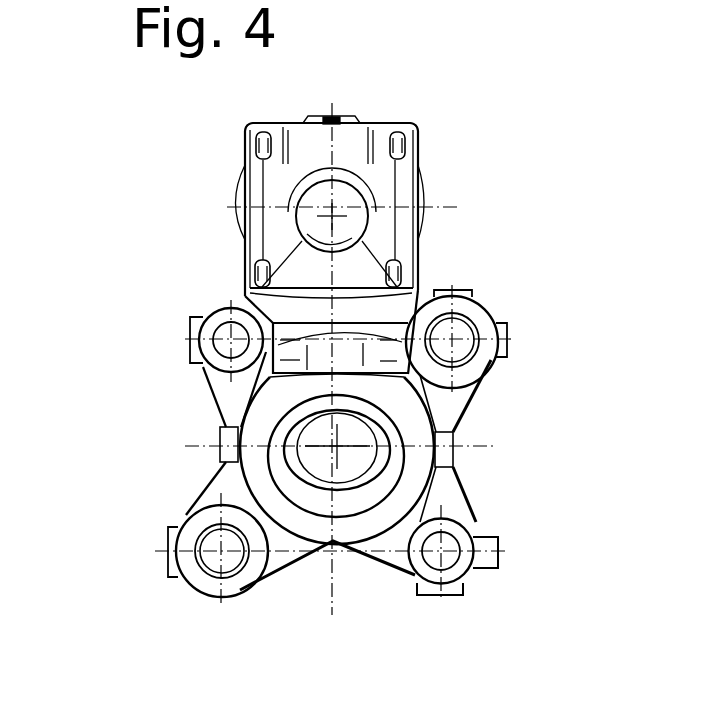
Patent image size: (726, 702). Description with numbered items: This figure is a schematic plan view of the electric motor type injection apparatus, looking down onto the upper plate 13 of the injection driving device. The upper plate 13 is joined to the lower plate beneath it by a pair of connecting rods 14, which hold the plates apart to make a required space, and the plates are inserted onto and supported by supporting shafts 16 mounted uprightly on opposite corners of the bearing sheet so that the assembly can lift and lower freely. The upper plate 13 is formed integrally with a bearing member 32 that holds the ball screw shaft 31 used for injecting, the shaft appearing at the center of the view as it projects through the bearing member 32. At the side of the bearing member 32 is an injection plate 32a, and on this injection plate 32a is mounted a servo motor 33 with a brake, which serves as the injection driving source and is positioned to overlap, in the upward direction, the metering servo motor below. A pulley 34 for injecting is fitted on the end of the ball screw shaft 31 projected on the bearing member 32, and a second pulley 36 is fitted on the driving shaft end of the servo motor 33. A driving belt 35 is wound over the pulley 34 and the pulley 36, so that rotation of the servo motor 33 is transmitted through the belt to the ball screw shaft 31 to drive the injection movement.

The upper plate 13 is at (286, 572).
The connecting rods 14 is at (190, 323).
The supporting shafts 16 is at (463, 328).
The ball screw shaft 31 is at (400, 474).
The bearing member 32 is at (427, 412).
The injection plate 32a is at (268, 180).
The servo motor 33 is at (417, 190).
The pulley 34 is at (222, 402).
The driving belt 35 is at (294, 233).
The pulley 36 is at (369, 236).